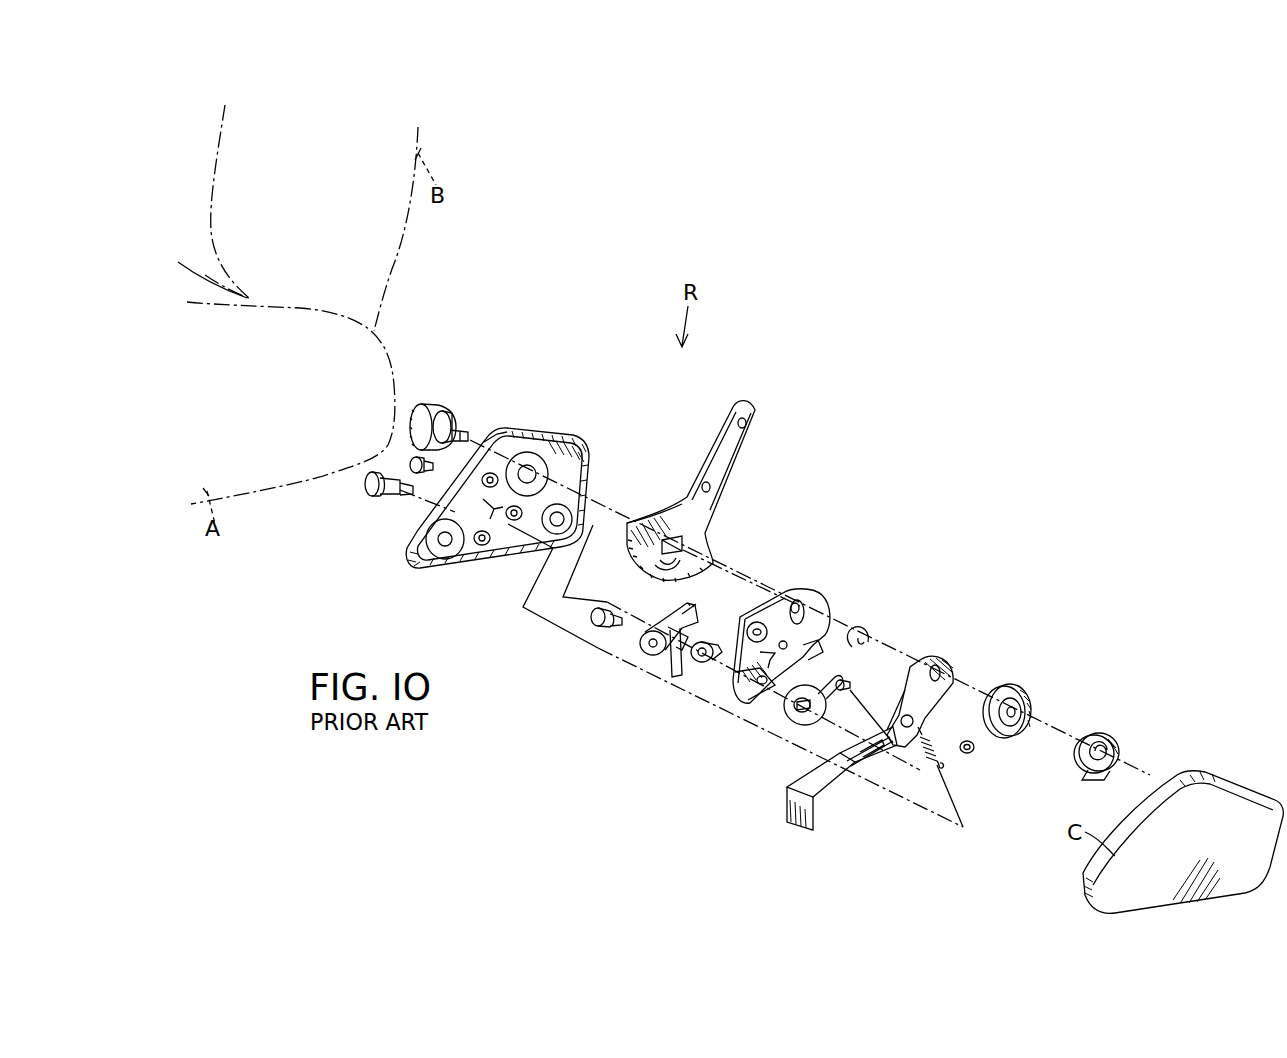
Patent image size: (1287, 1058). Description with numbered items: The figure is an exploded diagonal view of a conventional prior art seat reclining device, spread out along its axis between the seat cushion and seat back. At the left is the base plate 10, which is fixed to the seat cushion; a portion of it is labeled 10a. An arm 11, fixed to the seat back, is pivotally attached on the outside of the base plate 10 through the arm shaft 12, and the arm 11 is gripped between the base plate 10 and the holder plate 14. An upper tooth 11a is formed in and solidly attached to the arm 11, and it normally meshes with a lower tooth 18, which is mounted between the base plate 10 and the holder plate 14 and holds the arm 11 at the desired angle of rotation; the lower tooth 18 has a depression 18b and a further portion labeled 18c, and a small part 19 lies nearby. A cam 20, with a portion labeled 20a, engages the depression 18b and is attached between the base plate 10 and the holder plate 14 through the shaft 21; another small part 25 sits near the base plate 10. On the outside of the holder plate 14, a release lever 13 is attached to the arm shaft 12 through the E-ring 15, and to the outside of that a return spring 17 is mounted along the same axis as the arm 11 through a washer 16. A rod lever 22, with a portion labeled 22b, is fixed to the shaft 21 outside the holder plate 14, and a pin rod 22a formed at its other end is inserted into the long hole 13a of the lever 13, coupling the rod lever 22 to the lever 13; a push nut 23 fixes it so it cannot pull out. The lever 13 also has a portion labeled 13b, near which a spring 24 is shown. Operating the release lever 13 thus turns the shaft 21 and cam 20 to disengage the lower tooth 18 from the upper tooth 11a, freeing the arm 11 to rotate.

The base plate 10 is at (574, 452).
The base plate flange 10a is at (499, 436).
The arm 11 is at (742, 449).
The upper tooth 11a is at (706, 572).
The arm shaft 12 is at (432, 412).
The release lever 13 is at (830, 755).
The long hole 13a is at (898, 720).
The lever upper portion 13b is at (917, 718).
The holder plate 14 is at (828, 600).
The E-ring 15 is at (866, 632).
The washer 16 is at (1030, 698).
The return spring 17 is at (1103, 736).
The lower tooth 18 is at (670, 616).
The depression 18b is at (688, 620).
The lock lever tab 18c is at (672, 667).
The pin 19 is at (600, 628).
The cam 20 is at (692, 662).
The link hole 20a is at (712, 662).
The shaft 21 is at (388, 494).
The rod lever 22 is at (795, 712).
The pin rod 22a is at (848, 686).
The bushing hole 22b is at (812, 716).
The push nut 23 is at (972, 753).
The tension spring 24 is at (925, 752).
The screw 25 is at (410, 466).